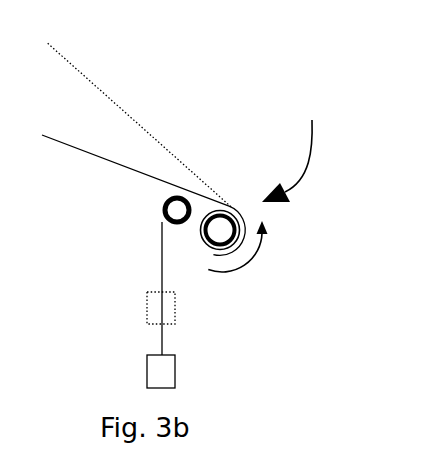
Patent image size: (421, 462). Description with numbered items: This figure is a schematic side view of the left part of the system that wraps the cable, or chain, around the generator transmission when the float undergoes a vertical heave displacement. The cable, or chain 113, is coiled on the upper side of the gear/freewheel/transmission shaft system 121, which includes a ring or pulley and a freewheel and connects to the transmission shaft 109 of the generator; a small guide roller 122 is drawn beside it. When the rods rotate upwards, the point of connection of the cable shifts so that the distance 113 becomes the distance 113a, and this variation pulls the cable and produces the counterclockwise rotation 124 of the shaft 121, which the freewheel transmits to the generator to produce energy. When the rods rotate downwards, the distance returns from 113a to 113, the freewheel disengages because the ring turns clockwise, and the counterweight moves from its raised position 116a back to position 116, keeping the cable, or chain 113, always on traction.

The cable or chain connection distance in raised position 113a is at (110, 90).
The cable or chain 113 is at (88, 147).
The gear/freewheel/transmission shaft system 121 is at (203, 203).
The guide roller 122 is at (182, 228).
The counterweight raised position 116a is at (140, 302).
The counterweight 116 is at (140, 366).
The rotary motion 124 is at (258, 255).
The transmission shaft of generator 109 is at (292, 143).